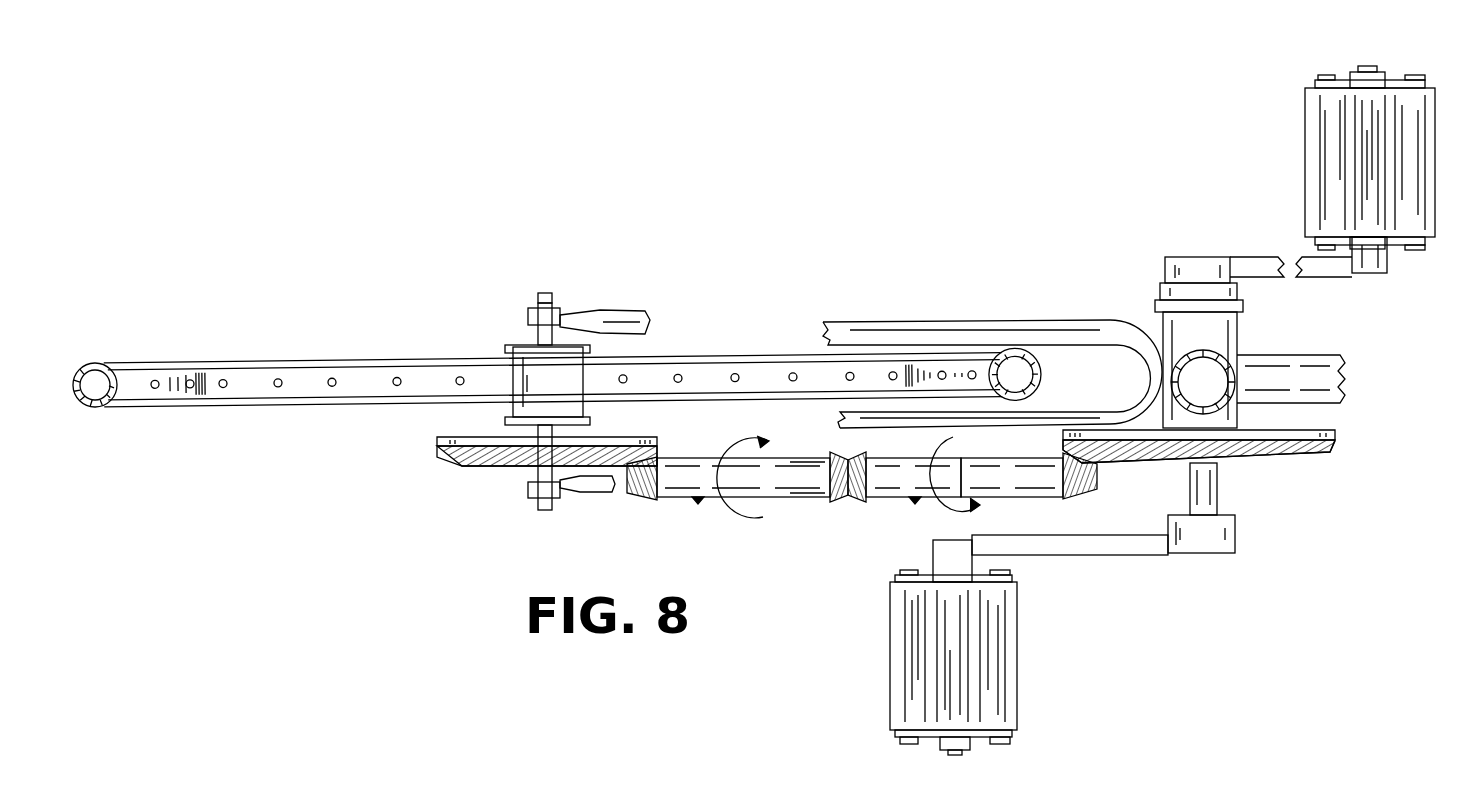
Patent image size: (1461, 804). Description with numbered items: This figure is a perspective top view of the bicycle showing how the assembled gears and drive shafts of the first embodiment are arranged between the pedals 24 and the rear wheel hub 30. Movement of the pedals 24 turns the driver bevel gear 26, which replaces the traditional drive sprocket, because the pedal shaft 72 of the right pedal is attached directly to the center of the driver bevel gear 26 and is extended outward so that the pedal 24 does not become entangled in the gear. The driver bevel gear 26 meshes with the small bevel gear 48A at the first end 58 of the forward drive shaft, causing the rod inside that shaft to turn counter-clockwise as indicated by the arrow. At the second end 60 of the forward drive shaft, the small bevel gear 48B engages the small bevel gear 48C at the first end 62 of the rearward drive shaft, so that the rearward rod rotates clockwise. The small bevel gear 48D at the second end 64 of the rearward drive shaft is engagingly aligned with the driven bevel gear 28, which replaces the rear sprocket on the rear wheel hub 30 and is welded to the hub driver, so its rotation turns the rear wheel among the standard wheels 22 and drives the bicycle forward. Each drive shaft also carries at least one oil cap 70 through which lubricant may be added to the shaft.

The wheels 22 is at (302, 380).
The pedals 24 is at (1318, 137).
The driver bevel gear 26 is at (1313, 452).
The driven bevel gear 28 is at (460, 465).
The rear wheel hub 30 is at (513, 362).
The small bevel gear 48A is at (1085, 498).
The small bevel gear 48B is at (858, 500).
The small bevel gear 48C is at (838, 498).
The small bevel gear 48D is at (637, 499).
The first end 58 is at (1052, 468).
The second end 60 is at (878, 470).
The first end 62 is at (813, 470).
The second end 64 is at (678, 462).
The oil cap 70 is at (698, 503).
The pedal shaft 72 is at (1233, 504).